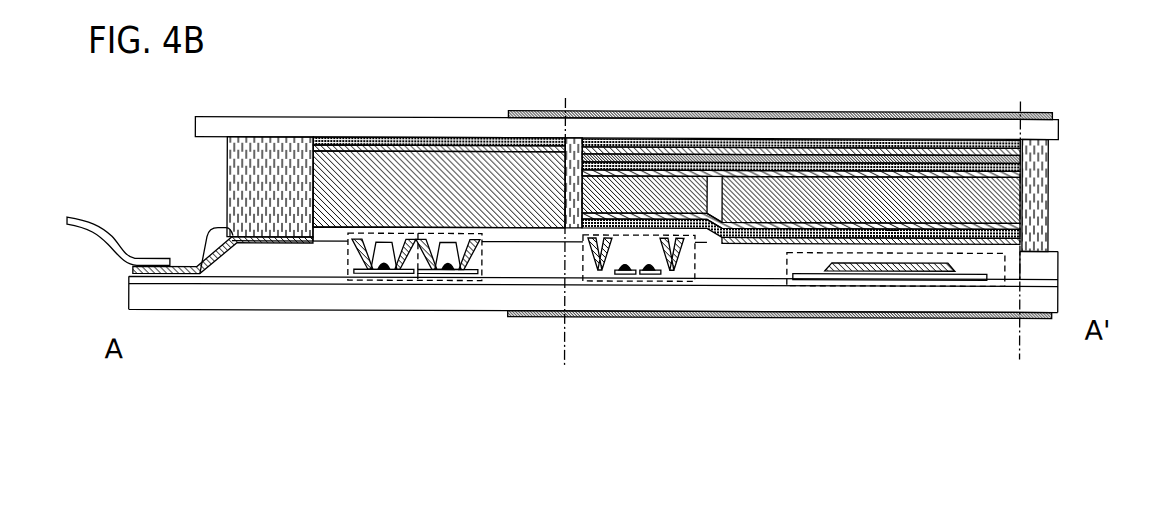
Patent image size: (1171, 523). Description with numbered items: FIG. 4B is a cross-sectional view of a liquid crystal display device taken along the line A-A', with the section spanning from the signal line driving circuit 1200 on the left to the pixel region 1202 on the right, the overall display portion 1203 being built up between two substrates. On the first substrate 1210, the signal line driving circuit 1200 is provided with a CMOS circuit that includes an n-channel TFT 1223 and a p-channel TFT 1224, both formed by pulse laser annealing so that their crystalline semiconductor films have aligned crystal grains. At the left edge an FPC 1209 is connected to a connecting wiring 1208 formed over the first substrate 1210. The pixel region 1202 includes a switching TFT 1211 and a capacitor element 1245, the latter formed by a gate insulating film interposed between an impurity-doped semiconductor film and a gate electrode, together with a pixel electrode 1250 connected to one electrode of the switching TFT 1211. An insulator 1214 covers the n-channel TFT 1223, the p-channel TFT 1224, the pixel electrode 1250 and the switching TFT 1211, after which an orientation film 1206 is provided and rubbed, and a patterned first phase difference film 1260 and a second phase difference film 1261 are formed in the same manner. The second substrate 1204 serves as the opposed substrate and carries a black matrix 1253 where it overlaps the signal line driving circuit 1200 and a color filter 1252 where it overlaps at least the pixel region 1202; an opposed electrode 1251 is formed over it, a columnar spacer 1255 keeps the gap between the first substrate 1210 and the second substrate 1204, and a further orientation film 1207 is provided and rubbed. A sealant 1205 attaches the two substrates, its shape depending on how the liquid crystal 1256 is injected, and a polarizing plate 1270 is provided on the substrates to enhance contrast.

The signal line driving circuit 1200 is at (412, 332).
The pixel region 1202 is at (788, 356).
The display portion 1203 is at (378, 4).
The second substrate 1204 is at (452, 128).
The sealant 1205 is at (279, 165).
The orientation film 1206 is at (873, 324).
The orientation film 1207 is at (630, 143).
The connecting wiring 1208 is at (203, 272).
The FPC 1209 is at (70, 223).
The first substrate 1210 is at (1049, 300).
The switching TFT 1211 is at (618, 283).
The insulator 1214 is at (510, 242).
The n-channel TFT 1223 is at (375, 282).
The p-channel TFT 1224 is at (445, 280).
The capacitor element 1245 is at (853, 283).
The pixel electrode 1250 is at (865, 297).
The opposed electrode 1251 is at (800, 204).
The color filter 1252 is at (802, 140).
The black matrix 1253 is at (342, 140).
The columnar spacer 1255 is at (580, 140).
The liquid crystal 1256 is at (381, 183).
The first phase difference film 1260 is at (948, 150).
The second phase difference film 1261 is at (742, 165).
The polarizing plate 1270 is at (1035, 112).